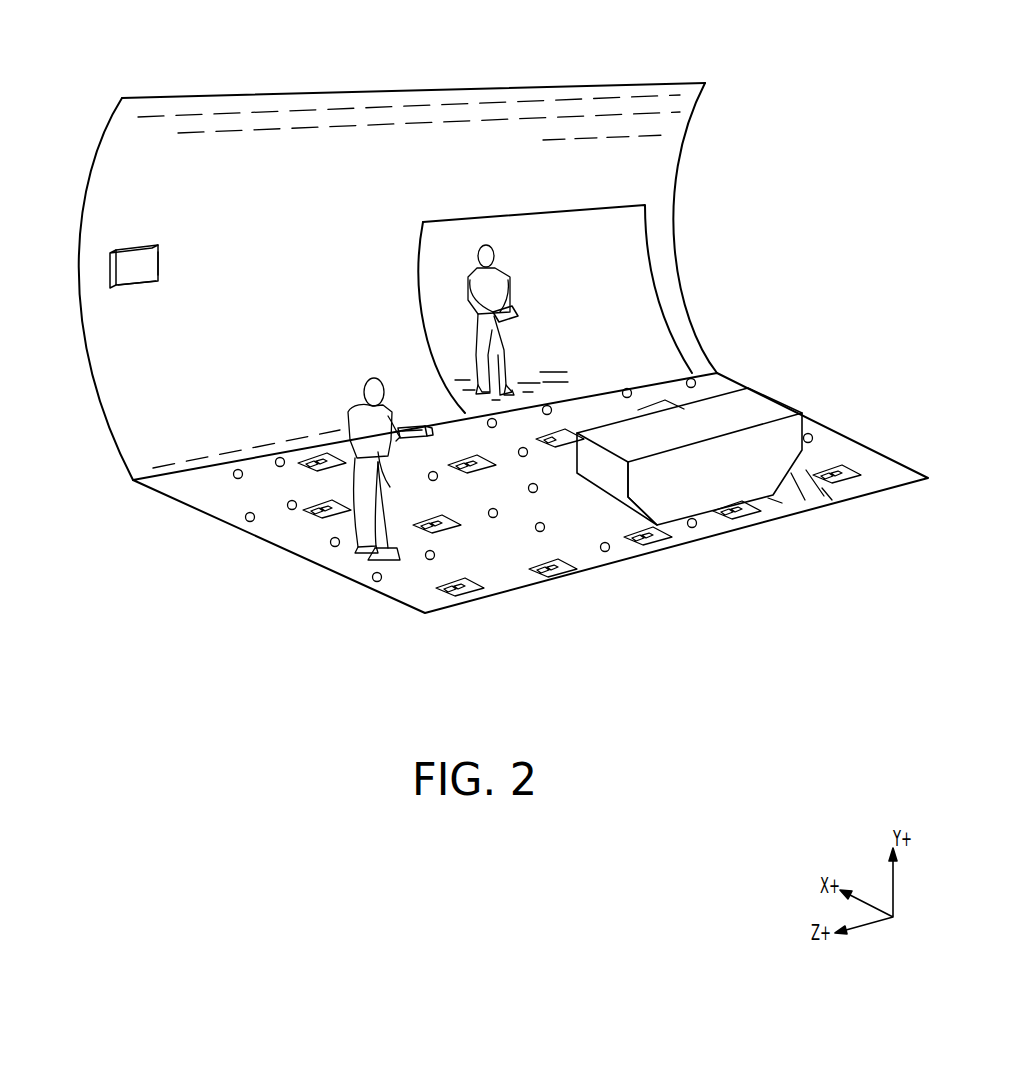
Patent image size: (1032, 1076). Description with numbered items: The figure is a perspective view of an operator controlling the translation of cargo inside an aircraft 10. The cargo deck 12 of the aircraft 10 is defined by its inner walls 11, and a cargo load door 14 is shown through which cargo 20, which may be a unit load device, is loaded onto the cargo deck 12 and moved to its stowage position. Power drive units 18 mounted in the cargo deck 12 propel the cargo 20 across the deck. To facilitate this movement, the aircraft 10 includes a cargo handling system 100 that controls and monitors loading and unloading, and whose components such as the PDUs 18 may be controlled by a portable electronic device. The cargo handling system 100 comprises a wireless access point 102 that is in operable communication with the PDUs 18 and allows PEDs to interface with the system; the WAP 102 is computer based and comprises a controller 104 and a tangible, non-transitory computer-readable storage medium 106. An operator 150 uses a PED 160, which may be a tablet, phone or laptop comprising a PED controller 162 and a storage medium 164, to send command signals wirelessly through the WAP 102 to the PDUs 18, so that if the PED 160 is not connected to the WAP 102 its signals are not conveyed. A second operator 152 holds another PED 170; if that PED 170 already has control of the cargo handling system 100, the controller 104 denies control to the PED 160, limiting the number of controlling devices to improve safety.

The aircraft 10 is at (143, 98).
The inner walls 11 is at (283, 219).
The cargo deck 12 is at (586, 522).
The cargo load door 14 is at (608, 206).
The power drive unit 18 is at (738, 514).
The cargo 20 is at (777, 410).
The cargo handling system 100 is at (114, 253).
The wireless access point 102 is at (161, 248).
The controller 104 is at (140, 306).
The tangible, non-transitory computer-readable storage medium 106 is at (158, 263).
The operator 150 is at (348, 403).
The operator 152 is at (505, 297).
The PED 160 is at (429, 408).
The PED controller 162 is at (410, 423).
The tangible, non-transitory computer-readable storage medium 164 is at (433, 435).
The PED 170 is at (515, 316).